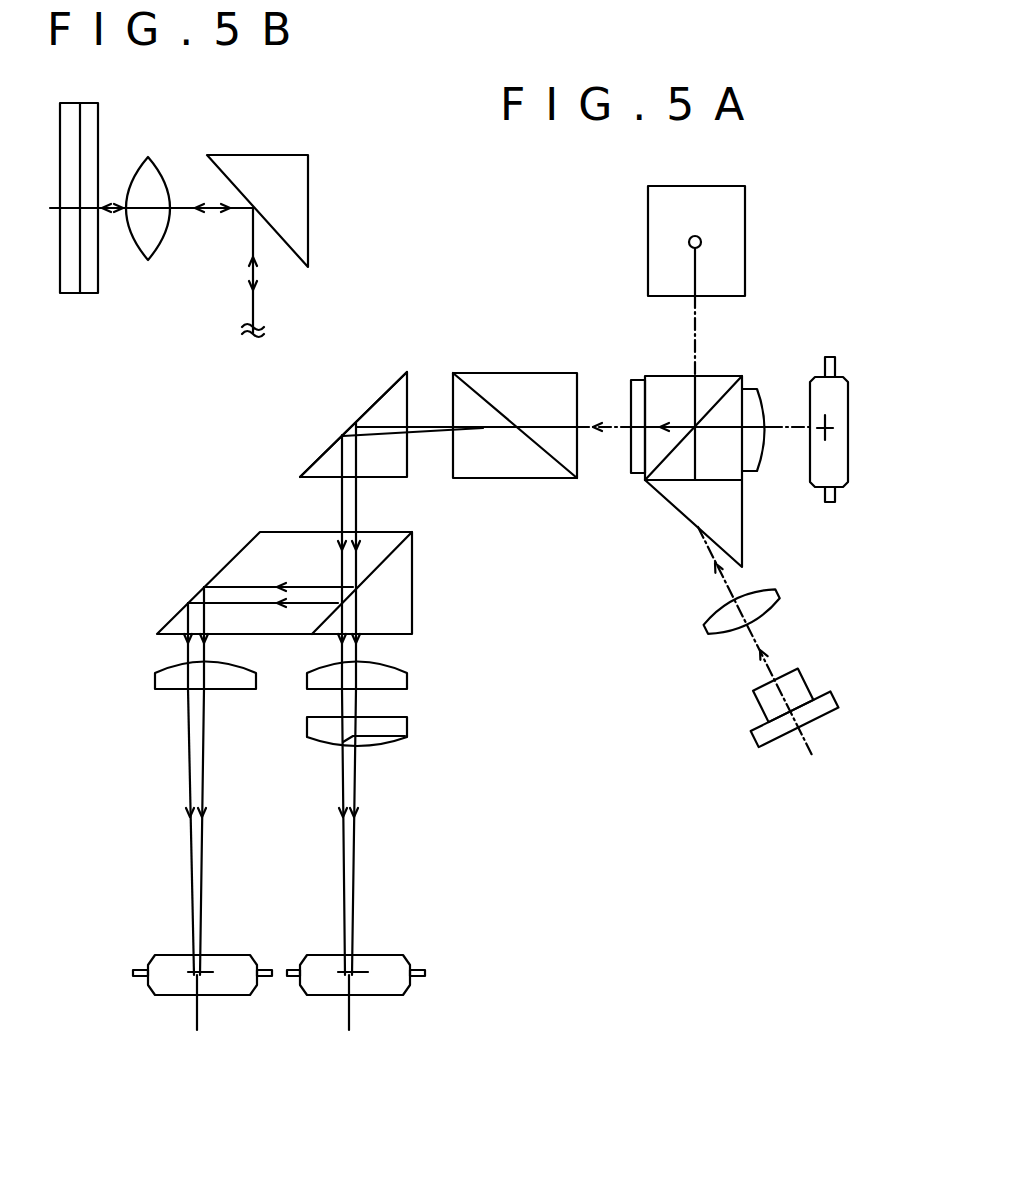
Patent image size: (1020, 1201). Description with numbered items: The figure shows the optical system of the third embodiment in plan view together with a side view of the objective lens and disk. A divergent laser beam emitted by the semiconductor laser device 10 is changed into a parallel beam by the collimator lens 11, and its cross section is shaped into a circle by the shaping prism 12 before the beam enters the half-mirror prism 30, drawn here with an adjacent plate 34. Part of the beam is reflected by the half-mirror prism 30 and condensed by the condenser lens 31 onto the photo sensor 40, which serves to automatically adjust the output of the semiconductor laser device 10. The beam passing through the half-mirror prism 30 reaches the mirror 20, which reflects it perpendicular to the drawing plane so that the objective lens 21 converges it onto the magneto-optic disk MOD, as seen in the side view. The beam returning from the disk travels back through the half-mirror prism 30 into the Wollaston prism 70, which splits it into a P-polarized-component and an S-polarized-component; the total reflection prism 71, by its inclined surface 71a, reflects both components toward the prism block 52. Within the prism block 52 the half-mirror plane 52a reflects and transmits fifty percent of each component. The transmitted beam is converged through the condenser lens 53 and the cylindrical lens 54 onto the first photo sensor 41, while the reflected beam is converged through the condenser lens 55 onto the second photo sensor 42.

In FIG. 5A, the semiconductor laser device 10 is at (755, 700).
In FIG. 5A, the collimator lens 11 is at (707, 625).
In FIG. 5A, the shaping prism 12 is at (742, 520).
In FIG. 5B, the mirror 20 is at (272, 165).
In FIG. 5A, the mirror 20 is at (745, 270).
In FIG. 5B, the objective lens 21 is at (160, 175).
In FIG. 5A, the half-mirror prism 30 is at (722, 382).
In FIG. 5A, the condenser lens 31 is at (752, 392).
In FIG. 5A, the plate 34 is at (640, 380).
In FIG. 5A, the photo sensor 40 is at (817, 490).
In FIG. 5A, the first photo sensor 41 is at (395, 953).
In FIG. 5A, the second photo sensor 42 is at (165, 953).
In FIG. 5A, the prism block 52 is at (237, 557).
In FIG. 5A, the half-mirror plane 52a is at (400, 548).
In FIG. 5A, the condenser lens 53 is at (410, 685).
In FIG. 5A, the cylindrical lens 54 is at (410, 730).
In FIG. 5A, the condenser lens 55 is at (170, 690).
In FIG. 5A, the Wollaston prism 70 is at (515, 358).
In FIG. 5A, the total reflection prism 71 is at (385, 410).
In FIG. 5A, the prism surface 71a is at (315, 460).
In FIG. 5B, the magneto-optic disk MOD is at (98, 270).